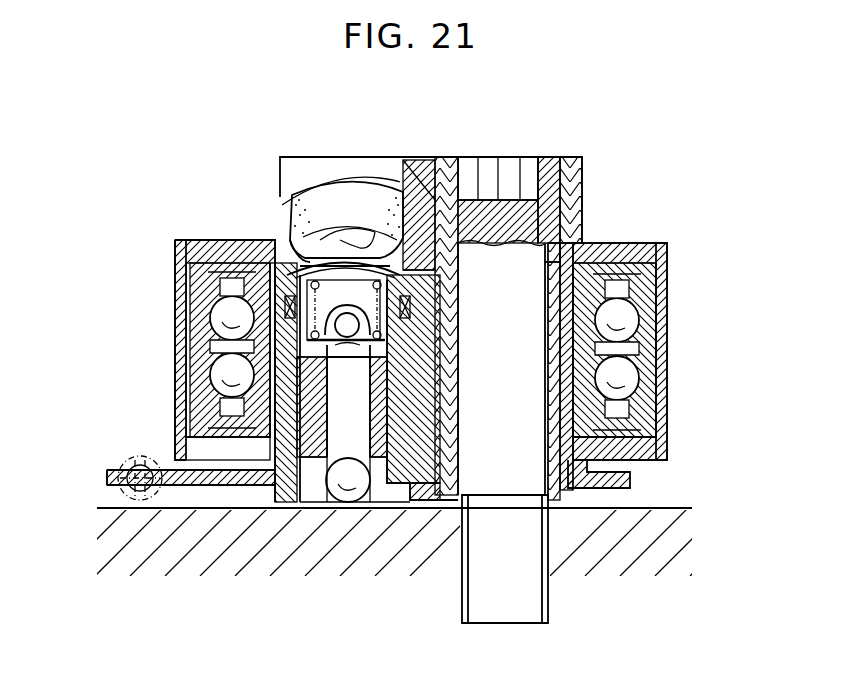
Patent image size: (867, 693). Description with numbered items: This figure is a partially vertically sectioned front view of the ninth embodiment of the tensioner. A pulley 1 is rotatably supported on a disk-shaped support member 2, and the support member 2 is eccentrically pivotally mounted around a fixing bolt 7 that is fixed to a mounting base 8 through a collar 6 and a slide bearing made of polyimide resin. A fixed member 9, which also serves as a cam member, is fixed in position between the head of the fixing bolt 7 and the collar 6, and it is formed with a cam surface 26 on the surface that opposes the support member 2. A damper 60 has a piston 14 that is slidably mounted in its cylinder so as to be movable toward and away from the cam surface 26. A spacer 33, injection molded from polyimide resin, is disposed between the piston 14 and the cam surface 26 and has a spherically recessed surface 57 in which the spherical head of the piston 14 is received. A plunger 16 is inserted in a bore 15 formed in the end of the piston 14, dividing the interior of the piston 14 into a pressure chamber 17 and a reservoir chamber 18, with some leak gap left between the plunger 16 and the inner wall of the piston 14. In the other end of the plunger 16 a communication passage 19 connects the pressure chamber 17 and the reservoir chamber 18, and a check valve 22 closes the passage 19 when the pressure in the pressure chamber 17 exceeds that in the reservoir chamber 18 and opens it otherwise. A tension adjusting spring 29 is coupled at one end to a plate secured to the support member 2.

The pulley 1 is at (663, 350).
The support member 2 is at (443, 260).
The collar 6 is at (535, 470).
The fixing bolt 7 is at (505, 217).
The mounting base 8 is at (658, 527).
The fixed member 9 is at (427, 160).
The piston 14 is at (297, 263).
The bore 15 is at (558, 317).
The plunger 16 is at (307, 420).
The pressure chamber 17 is at (338, 293).
The reservoir chamber 18 is at (383, 455).
The communication passage 19 is at (312, 410).
The check valve 22 is at (355, 320).
The cam surface 26 is at (388, 178).
The tension adjusting spring 29 is at (125, 462).
The spacer 33 is at (318, 195).
The spherically recessed surface 57 is at (292, 213).
The damper 60 is at (305, 432).